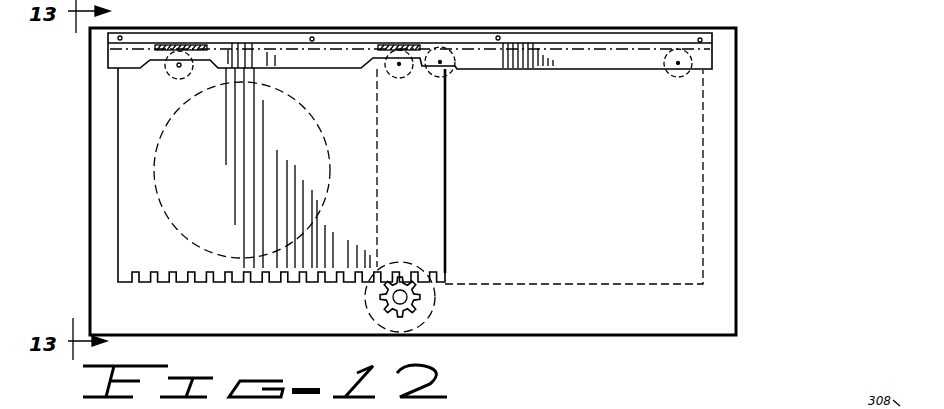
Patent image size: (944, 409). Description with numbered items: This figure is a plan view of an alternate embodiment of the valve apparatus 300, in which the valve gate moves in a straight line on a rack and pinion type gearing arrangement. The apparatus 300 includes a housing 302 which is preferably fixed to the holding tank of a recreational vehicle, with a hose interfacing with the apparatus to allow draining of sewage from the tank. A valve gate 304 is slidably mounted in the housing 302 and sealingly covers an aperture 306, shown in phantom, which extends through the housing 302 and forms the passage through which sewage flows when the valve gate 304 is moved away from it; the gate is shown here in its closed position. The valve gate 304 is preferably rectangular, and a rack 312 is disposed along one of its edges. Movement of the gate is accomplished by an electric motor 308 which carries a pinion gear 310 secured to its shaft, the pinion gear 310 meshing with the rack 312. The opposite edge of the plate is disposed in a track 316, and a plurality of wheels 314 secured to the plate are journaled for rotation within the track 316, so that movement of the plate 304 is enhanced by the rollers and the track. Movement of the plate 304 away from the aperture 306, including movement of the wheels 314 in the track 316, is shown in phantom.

The valve apparatus 300 is at (468, 170).
The housing 302 is at (723, 94).
The valve gate 304 is at (430, 148).
The aperture 306 is at (314, 146).
The electric motor 308 is at (423, 282).
The pinion gear 310 is at (412, 308).
The rack 312 is at (297, 282).
The wheels 314 is at (183, 54).
The track 316 is at (560, 62).